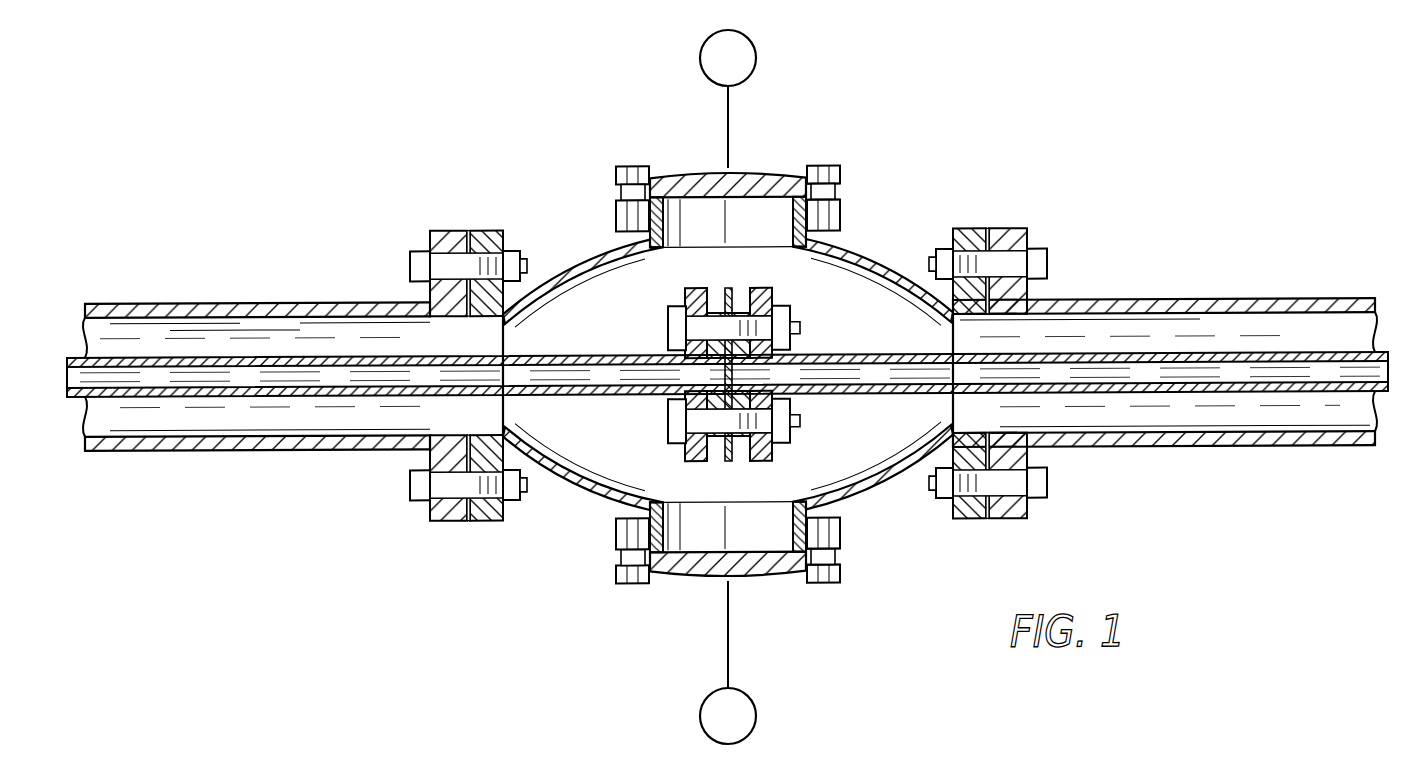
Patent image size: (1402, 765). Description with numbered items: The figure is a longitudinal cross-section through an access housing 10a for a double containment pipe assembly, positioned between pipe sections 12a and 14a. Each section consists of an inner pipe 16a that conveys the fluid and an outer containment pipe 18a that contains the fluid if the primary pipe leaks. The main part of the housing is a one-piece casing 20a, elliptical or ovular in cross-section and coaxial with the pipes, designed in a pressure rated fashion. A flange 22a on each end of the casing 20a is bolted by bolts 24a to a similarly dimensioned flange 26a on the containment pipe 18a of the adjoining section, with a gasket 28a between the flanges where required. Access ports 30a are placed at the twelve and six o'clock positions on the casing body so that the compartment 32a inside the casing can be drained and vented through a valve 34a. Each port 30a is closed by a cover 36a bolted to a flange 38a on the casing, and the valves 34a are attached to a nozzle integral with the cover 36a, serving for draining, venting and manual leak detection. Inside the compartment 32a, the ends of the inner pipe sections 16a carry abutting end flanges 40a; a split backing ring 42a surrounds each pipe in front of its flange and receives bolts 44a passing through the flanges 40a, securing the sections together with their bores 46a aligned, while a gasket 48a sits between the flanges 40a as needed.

The access housing 10a is at (884, 241).
The section of double containment pipe assembly 12a is at (113, 293).
The section of double containment pipe assembly 14a is at (1234, 287).
The inner pipe 16a is at (172, 396).
The outer containment pipe 18a is at (280, 300).
The casing 20a is at (590, 493).
The flange 22a is at (492, 242).
The bolts 24a is at (410, 490).
The flange 26a is at (1018, 240).
The gasket 28a is at (468, 231).
The access port 30a is at (745, 213).
The compartment 32a is at (618, 454).
The valve 34a is at (758, 56).
The cover 36a is at (665, 168).
The flange 38a is at (836, 194).
The end flange 40a is at (740, 313).
The split backing ring 42a is at (773, 305).
The bolts 44a is at (668, 330).
The bore 46a is at (350, 357).
The gasket 48a is at (728, 300).